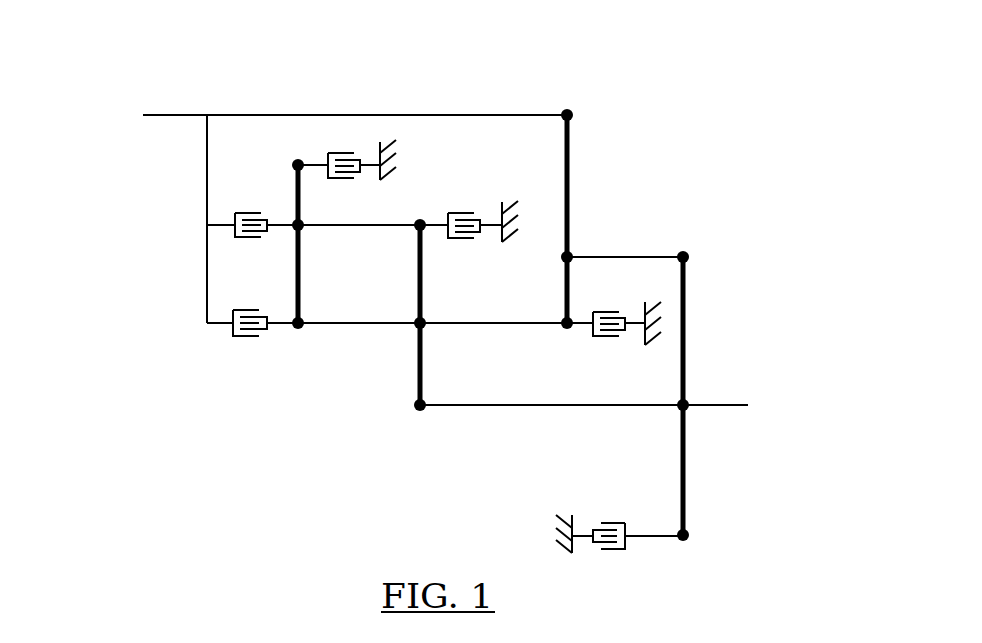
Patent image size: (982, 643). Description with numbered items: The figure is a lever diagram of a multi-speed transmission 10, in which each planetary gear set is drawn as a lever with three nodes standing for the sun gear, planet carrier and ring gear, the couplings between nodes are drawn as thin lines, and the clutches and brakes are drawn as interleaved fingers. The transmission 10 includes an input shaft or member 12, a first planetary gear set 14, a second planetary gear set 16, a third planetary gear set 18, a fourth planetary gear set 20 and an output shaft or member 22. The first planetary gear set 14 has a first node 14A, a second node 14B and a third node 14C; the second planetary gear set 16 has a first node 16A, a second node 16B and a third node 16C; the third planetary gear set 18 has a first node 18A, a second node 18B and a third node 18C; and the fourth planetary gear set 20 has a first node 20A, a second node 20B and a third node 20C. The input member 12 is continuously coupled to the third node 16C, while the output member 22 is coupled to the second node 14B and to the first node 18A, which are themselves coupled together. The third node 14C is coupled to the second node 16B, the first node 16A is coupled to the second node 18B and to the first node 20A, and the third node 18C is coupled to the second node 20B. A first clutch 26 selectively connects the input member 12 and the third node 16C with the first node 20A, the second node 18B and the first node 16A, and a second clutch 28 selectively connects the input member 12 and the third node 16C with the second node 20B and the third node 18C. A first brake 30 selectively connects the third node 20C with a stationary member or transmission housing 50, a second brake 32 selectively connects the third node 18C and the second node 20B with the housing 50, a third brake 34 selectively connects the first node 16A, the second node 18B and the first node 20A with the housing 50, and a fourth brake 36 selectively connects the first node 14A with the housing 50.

The multi-speed transmission 10 is at (748, 116).
The input shaft or member 12 is at (153, 117).
The first planetary gear set 14 is at (718, 327).
The first node of first planetary gear set 14A is at (690, 536).
The second node of first planetary gear set 14B is at (679, 410).
The third node of first planetary gear set 14C is at (684, 251).
The second planetary gear set 16 is at (541, 95).
The first node of second planetary gear set 16A is at (562, 328).
The second node of second planetary gear set 16B is at (561, 261).
The third node of second planetary gear set 16C is at (568, 108).
The third planetary gear set 18 is at (420, 214).
The first node of third planetary gear set 18A is at (414, 410).
The second node of third planetary gear set 18B is at (415, 318).
The third node of third planetary gear set 18C is at (415, 231).
The fourth planetary gear set 20 is at (293, 140).
The first node of fourth planetary gear set 20A is at (299, 332).
The second node of fourth planetary gear set 20B is at (293, 231).
The third node of fourth planetary gear set 20C is at (291, 164).
The output shaft or member 22 is at (727, 408).
The first clutch 26 is at (243, 338).
The second clutch 28 is at (234, 214).
The first brake 30 is at (338, 152).
The second brake 32 is at (464, 212).
The third brake 34 is at (609, 340).
The fourth brake 36 is at (617, 522).
The stationary member or transmission housing 50 is at (392, 140).